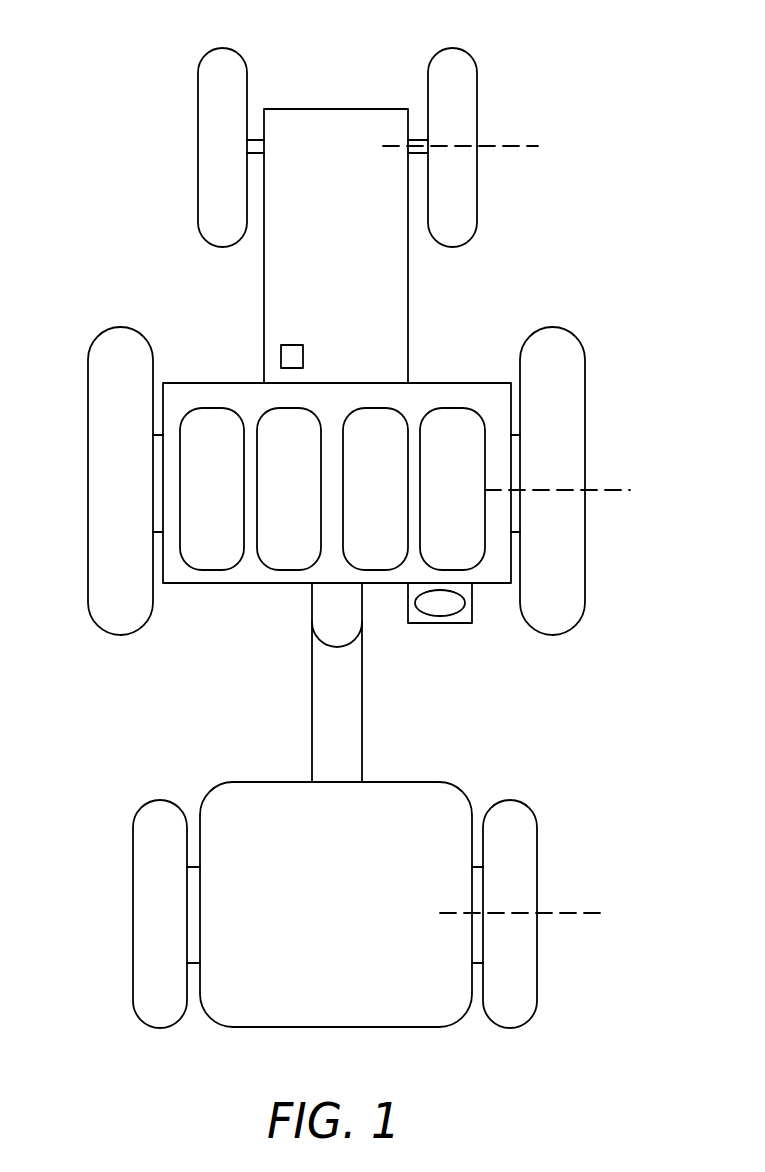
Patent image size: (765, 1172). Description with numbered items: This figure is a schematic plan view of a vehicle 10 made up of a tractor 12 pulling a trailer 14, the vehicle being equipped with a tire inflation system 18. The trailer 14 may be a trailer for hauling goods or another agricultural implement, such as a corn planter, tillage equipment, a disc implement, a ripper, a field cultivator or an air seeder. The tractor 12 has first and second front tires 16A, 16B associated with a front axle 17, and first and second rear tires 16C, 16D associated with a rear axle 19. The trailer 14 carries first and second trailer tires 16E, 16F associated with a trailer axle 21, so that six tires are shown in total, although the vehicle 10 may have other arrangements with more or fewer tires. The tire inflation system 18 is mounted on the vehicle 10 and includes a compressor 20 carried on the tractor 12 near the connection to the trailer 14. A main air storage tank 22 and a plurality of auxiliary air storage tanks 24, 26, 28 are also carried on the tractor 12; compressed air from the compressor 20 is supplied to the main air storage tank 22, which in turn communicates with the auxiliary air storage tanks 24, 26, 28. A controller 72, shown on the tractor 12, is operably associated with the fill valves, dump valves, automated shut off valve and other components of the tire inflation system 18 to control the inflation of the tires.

The vehicle 10 is at (620, 221).
The tractor 12 is at (380, 352).
The trailer 14 is at (433, 787).
The first front tire 16A is at (222, 63).
The second front tire 16B is at (453, 63).
The first rear tire 16C is at (118, 340).
The second rear tire 16D is at (552, 338).
The first trailer tire 16E is at (155, 812).
The second trailer tire 16F is at (517, 812).
The front axle 17 is at (515, 146).
The tire inflation system 18 is at (413, 635).
The rear axle 19 is at (617, 486).
The compressor 20 is at (440, 610).
The trailer axle 21 is at (565, 912).
The main air storage tank 22 is at (464, 509).
The auxiliary air storage tank 24 is at (389, 509).
The auxiliary air storage tank 26 is at (302, 509).
The auxiliary air storage tank 28 is at (225, 509).
The controller 72 is at (290, 357).